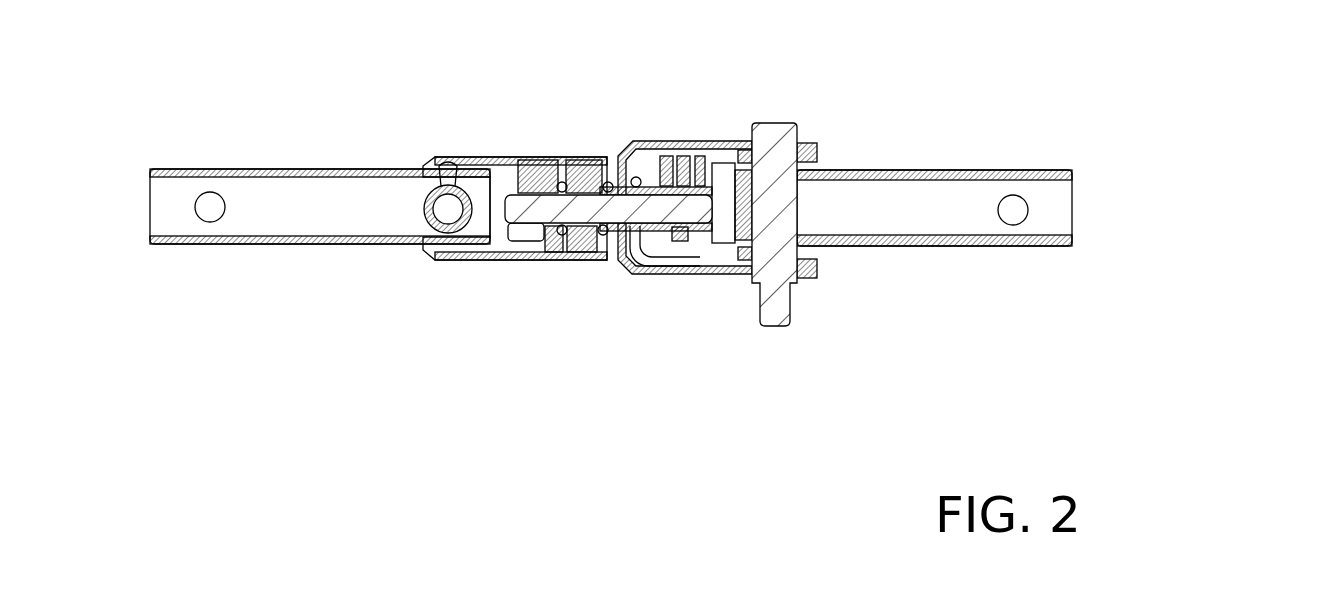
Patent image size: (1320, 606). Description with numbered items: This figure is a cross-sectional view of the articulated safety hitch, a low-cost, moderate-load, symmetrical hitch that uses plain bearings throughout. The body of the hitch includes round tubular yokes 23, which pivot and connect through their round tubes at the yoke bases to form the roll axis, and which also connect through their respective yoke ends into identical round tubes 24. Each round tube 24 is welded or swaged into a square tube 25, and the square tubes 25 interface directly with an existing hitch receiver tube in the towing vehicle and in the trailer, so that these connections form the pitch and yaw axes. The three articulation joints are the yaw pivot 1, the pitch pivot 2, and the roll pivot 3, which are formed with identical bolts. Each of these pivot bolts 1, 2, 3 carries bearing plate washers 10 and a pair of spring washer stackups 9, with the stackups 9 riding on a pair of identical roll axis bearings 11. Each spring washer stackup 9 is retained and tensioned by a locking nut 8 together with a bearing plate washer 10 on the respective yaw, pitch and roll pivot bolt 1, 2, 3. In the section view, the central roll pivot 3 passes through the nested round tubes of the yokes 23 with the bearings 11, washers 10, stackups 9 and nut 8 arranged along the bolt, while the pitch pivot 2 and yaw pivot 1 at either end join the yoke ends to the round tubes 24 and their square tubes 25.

The yaw pivot 1 is at (772, 327).
The pitch pivot 2 is at (425, 209).
The roll pivot 3 is at (700, 256).
The locking nut 8 is at (520, 240).
The spring washer stackup 9 is at (686, 180).
The bearing plate washer 10 is at (541, 168).
The roll axis bearing 11 is at (804, 163).
The round tubular yoke 23 is at (573, 254).
The round tube 24 is at (420, 236).
The square tube 25 is at (256, 168).